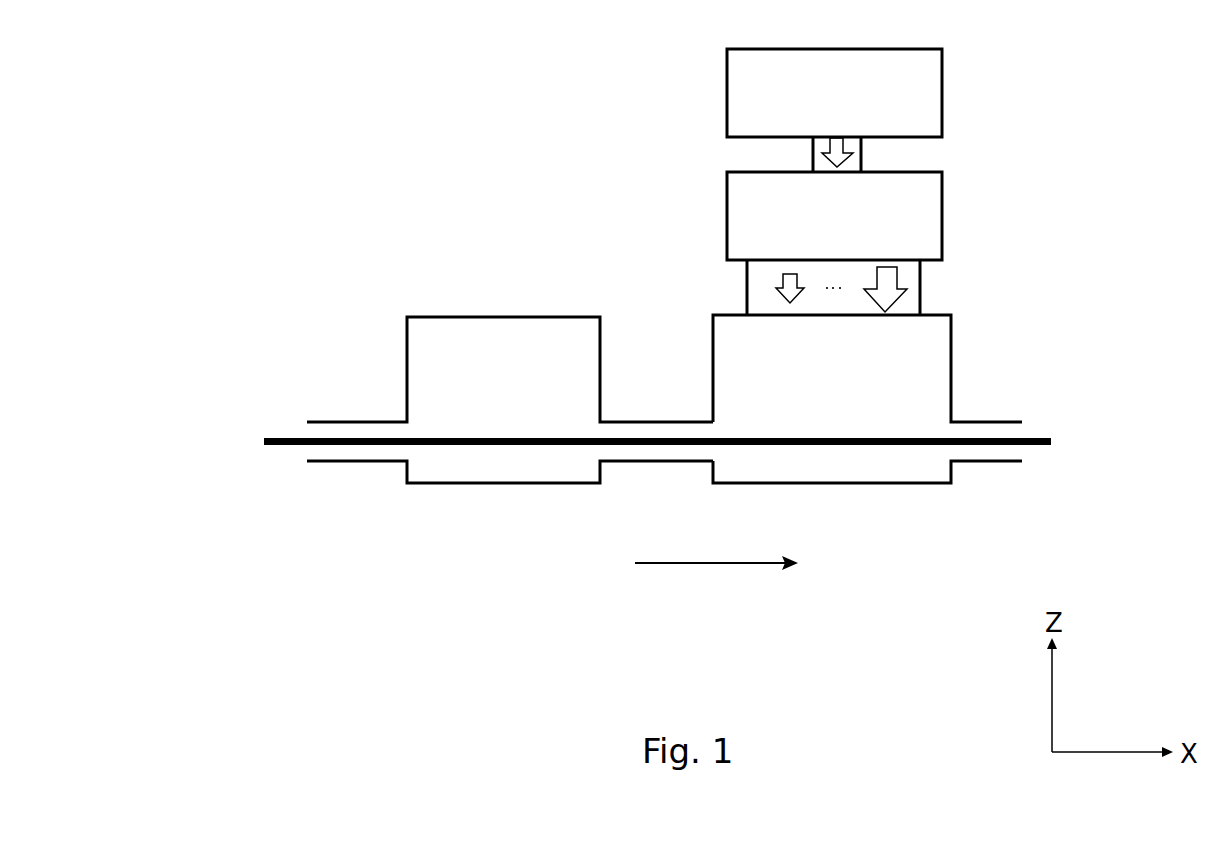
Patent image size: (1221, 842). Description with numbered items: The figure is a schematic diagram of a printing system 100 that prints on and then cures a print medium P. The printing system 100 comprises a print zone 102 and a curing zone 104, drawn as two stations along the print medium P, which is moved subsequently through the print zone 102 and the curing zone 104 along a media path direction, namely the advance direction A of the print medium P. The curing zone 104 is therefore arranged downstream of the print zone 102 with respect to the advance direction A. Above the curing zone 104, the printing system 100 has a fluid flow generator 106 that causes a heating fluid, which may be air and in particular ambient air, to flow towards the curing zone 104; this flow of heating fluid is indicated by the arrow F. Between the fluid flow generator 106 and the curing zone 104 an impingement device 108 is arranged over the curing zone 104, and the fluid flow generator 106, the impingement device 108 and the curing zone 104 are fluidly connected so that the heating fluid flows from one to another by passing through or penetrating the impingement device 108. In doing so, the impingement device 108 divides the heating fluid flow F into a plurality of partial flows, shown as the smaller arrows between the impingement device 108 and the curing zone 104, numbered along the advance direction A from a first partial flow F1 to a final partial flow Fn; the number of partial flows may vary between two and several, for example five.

The printing system 100 is at (519, 149).
The print zone 102 is at (490, 462).
The curing zone 104 is at (903, 466).
The fluid flow generator 106 is at (923, 86).
The impingement device 108 is at (913, 212).
The print medium P is at (264, 441).
The heating fluid flow F is at (830, 146).
The first partial flow F1 is at (784, 285).
The final partial flow Fn is at (890, 276).
The advance direction A is at (718, 563).